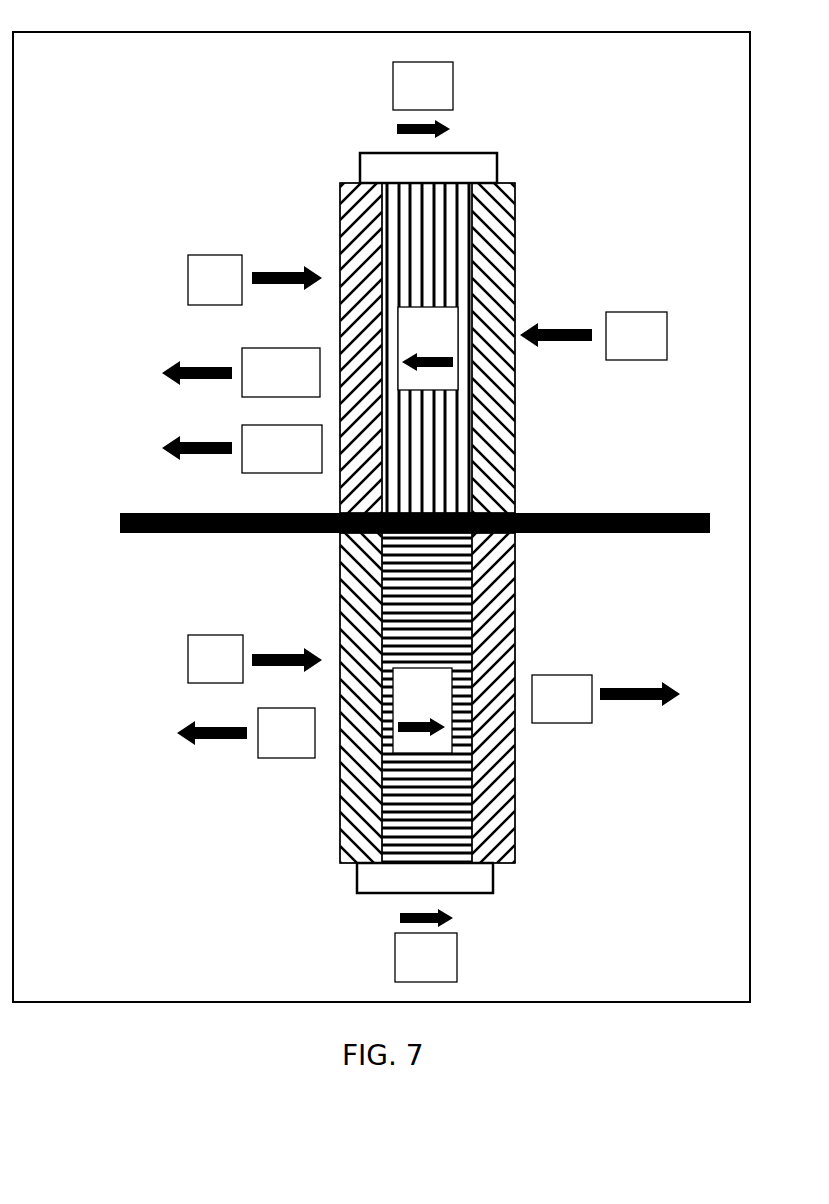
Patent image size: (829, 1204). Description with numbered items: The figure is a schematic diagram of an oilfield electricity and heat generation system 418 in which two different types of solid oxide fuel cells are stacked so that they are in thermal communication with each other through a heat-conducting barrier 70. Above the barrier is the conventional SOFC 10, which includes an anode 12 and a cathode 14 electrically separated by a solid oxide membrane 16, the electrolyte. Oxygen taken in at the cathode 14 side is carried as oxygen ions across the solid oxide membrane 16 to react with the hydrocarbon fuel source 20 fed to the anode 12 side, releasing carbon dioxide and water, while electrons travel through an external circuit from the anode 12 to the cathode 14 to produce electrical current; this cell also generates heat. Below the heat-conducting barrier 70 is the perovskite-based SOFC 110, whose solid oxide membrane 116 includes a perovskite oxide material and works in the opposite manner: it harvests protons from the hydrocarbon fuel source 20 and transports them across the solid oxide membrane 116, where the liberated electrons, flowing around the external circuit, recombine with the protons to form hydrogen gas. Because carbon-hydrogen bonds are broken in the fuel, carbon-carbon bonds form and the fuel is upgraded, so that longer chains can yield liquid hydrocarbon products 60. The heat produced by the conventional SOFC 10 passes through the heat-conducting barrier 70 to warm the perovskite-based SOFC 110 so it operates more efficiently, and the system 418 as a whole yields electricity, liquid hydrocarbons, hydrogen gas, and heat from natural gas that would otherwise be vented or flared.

The oilfield electricity and heat generation system 418 is at (147, 131).
The conventional SOFC 10 is at (227, 214).
The anode 12 is at (355, 225).
The cathode 14 is at (495, 225).
The solid oxide membrane 16 is at (442, 472).
The hydrocarbon fuel source 20 is at (255, 469).
The liquid hydrocarbon products 60 is at (246, 733).
The heat-conducting barrier 70 is at (120, 522).
The perovskite-based SOFC 110 is at (240, 597).
The solid oxide membrane 116 is at (445, 603).